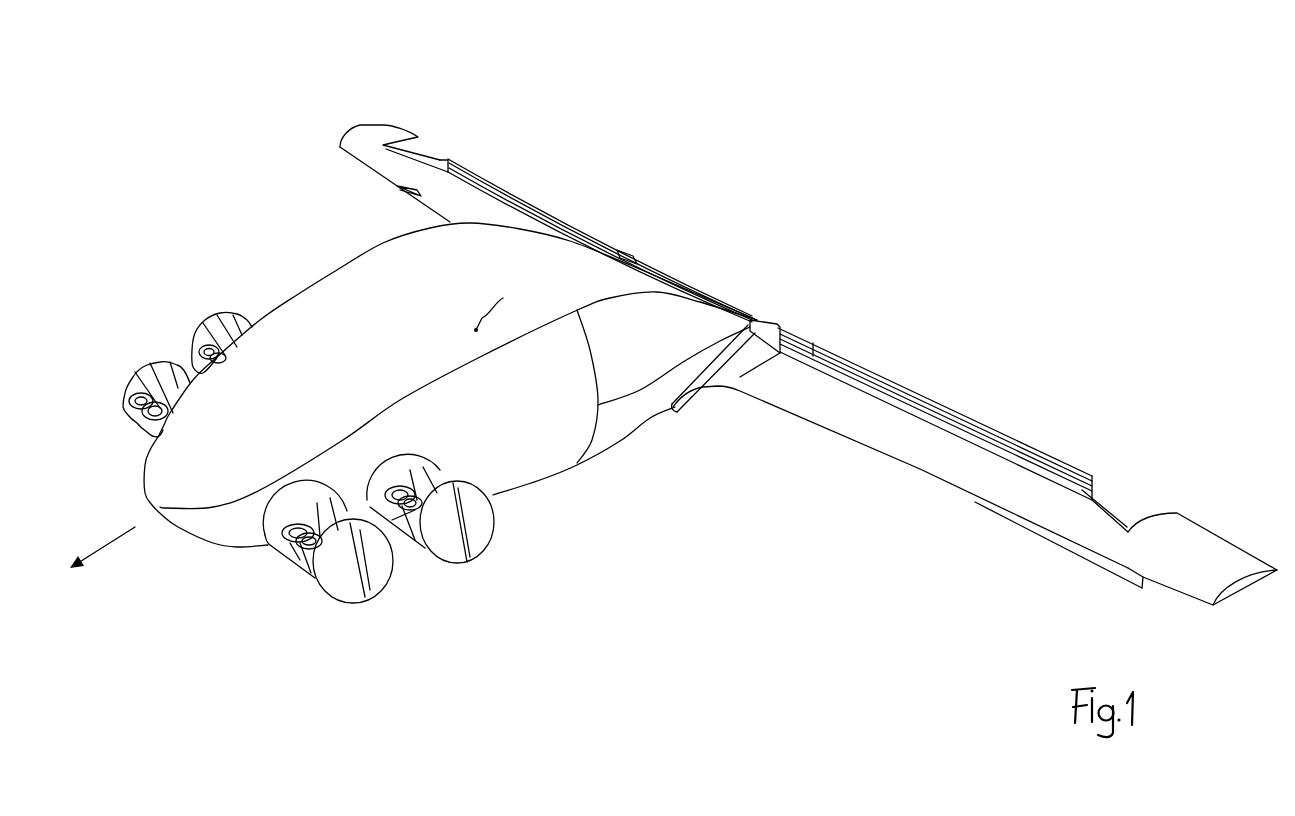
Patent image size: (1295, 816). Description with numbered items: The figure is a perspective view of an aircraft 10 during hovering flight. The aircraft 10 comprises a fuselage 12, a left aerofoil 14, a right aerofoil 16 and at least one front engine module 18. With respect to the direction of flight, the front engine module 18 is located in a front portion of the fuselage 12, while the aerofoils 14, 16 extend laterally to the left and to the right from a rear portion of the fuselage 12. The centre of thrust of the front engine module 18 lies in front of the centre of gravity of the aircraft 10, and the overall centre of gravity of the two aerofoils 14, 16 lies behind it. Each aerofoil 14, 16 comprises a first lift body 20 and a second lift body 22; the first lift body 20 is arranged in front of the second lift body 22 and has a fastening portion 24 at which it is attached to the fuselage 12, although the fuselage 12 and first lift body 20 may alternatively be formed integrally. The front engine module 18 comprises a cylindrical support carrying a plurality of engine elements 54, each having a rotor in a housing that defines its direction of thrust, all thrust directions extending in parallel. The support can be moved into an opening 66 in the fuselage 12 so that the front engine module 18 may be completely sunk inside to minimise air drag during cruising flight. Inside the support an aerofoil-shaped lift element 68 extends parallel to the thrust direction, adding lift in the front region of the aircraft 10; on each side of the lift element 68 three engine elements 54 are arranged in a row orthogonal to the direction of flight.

The aircraft 10 is at (226, 108).
The fuselage 12 is at (557, 460).
The left aerofoil 14 is at (783, 418).
The right aerofoil 16 is at (435, 199).
The front engine module 18 is at (327, 598).
The first lift body 20 is at (863, 433).
The second lift body 22 is at (1085, 552).
The fastening portion 24 is at (701, 384).
The engine element 54 is at (271, 540).
The opening 66 is at (266, 500).
The lift element 68 is at (317, 513).